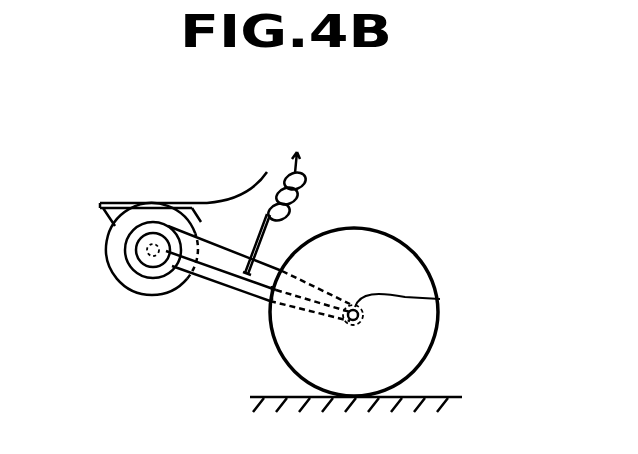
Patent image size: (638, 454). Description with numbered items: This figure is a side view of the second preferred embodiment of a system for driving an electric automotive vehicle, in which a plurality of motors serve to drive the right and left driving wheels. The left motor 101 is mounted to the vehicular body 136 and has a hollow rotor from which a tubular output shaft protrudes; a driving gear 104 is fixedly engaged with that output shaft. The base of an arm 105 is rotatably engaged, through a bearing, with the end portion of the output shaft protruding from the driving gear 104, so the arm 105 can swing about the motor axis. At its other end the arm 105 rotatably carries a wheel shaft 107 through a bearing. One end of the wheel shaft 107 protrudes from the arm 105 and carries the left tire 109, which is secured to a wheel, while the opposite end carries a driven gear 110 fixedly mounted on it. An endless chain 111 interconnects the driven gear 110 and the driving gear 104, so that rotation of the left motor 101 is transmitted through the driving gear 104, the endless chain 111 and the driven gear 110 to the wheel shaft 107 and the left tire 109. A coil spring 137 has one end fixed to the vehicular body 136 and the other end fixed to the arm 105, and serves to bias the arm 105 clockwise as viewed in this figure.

The left motor 101 is at (117, 268).
The driving gear 104 is at (138, 282).
The arm 105 is at (218, 278).
The wheel shaft 107 is at (360, 319).
The left tire 109 is at (380, 258).
The driven gear 110 is at (450, 297).
The endless chain 111 is at (240, 297).
The vehicular body 136 is at (238, 192).
The coil spring 137 is at (310, 173).